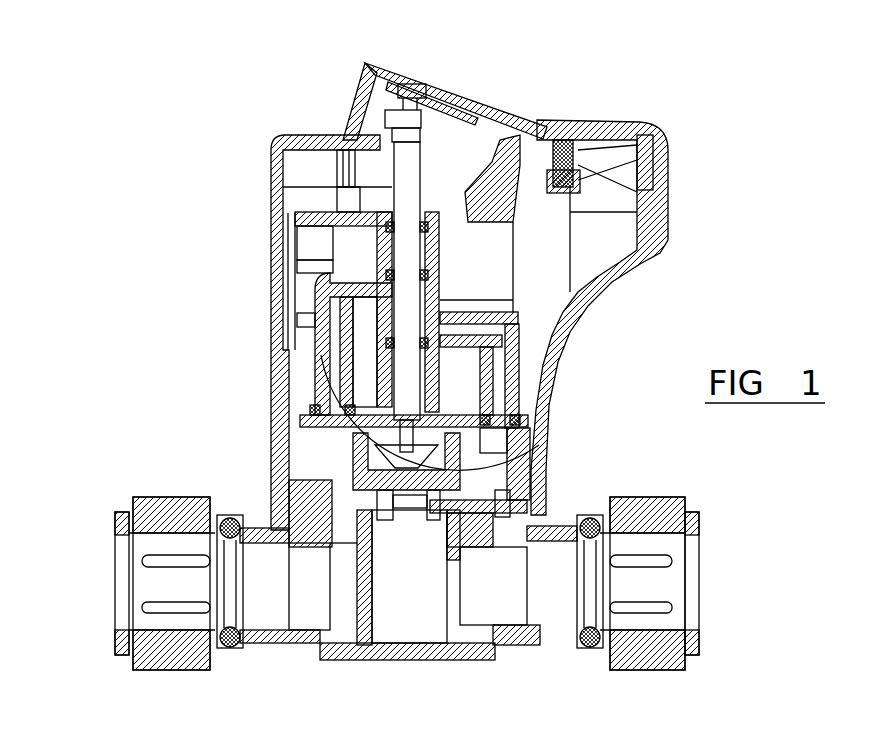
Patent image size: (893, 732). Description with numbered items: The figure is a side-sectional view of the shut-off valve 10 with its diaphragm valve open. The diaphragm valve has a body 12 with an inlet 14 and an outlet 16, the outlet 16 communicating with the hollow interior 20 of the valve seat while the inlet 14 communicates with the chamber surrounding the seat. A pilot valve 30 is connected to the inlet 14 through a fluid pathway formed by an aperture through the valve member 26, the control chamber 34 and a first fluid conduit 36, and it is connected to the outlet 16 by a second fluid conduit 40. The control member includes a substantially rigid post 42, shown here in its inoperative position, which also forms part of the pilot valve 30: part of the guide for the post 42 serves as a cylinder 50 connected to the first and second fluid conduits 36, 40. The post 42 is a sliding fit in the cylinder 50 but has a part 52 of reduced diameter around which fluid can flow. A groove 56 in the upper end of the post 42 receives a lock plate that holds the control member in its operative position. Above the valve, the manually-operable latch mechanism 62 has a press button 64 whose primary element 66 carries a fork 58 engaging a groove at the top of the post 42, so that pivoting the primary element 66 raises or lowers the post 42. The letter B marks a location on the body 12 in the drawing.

The shut-off valve 10 is at (770, 208).
The body 12 is at (540, 442).
The inlet 14 is at (253, 572).
The outlet 16 is at (563, 593).
The hollow interior 20 is at (433, 570).
The valve member 26 is at (340, 462).
The pilot valve 30 is at (345, 330).
The control chamber 34 is at (335, 438).
The first fluid conduit 36 is at (325, 322).
The second fluid conduit 40 is at (500, 358).
The post 42 is at (305, 168).
The cylinder 50 is at (400, 300).
The part of reduced diameter 52 is at (400, 308).
The groove 56 is at (352, 118).
The fork 58 is at (425, 103).
The latch mechanism 62 is at (552, 108).
The press button 64 is at (617, 135).
The primary element 66 is at (358, 84).
The bend B is at (540, 427).